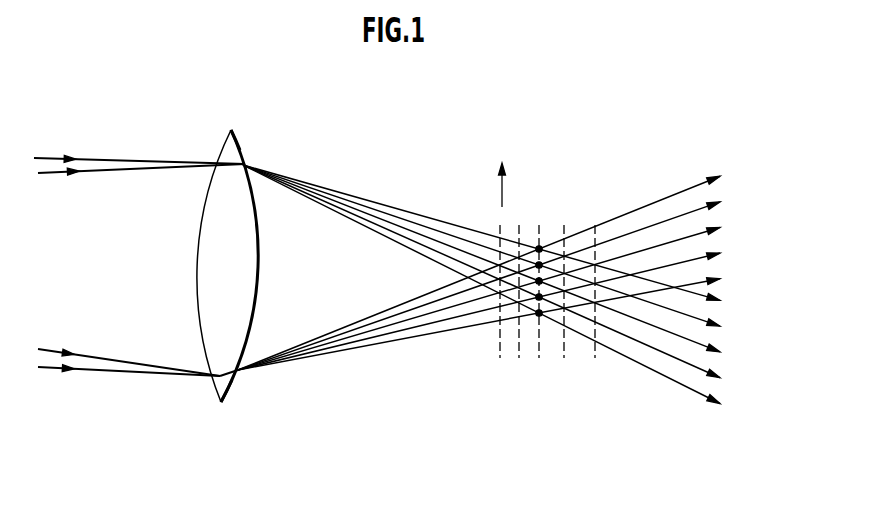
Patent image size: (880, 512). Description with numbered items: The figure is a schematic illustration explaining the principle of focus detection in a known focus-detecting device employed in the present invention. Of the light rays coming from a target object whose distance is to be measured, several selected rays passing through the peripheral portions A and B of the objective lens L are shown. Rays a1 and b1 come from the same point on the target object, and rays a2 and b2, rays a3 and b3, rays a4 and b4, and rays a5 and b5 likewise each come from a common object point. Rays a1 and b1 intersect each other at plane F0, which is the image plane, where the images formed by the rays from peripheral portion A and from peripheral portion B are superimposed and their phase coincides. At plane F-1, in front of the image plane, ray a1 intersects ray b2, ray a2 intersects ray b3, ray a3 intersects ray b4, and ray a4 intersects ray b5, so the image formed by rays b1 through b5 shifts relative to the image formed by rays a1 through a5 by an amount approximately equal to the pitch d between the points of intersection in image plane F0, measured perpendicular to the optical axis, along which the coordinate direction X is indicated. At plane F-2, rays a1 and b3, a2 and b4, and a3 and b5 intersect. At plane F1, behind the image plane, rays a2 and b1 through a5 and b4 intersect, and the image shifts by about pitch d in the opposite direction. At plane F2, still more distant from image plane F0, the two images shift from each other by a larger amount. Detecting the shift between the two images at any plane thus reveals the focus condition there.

The objective lens L is at (221, 402).
The peripheral portion B of the objective lens B is at (233, 145).
The peripheral portion A of the objective lens A is at (233, 383).
The optical axis direction X is at (503, 192).
The pitch d is at (540, 247).
The plane F-2 is at (500, 358).
The plane F-1 is at (519, 358).
The image plane F0 is at (539, 358).
The plane F1 is at (564, 358).
The plane F2 is at (595, 358).
The ray a1 is at (497, 268).
The ray b1 is at (500, 239).
The ray a2 is at (497, 281).
The ray b2 is at (500, 252).
The ray a3 is at (497, 294).
The ray b3 is at (500, 265).
The ray a4 is at (497, 306).
The ray b4 is at (500, 278).
The ray a5 is at (497, 319).
The ray b5 is at (500, 291).